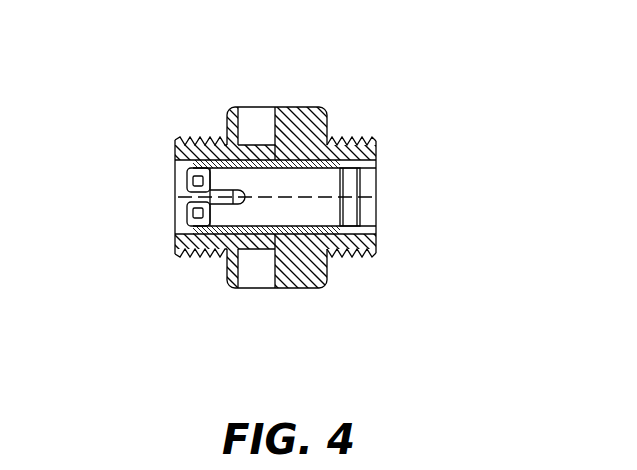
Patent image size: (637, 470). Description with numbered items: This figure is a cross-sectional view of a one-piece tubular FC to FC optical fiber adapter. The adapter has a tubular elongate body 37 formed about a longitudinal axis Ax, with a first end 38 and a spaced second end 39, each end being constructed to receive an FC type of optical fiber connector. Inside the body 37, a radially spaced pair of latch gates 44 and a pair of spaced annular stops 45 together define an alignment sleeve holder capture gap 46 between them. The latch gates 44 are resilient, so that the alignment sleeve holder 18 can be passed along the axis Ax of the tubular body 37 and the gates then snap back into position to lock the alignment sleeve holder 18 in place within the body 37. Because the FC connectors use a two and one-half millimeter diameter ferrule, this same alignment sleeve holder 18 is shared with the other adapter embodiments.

The alignment sleeve holder 18 is at (279, 183).
The tubular elongate body 37 is at (317, 289).
The first end 38 is at (367, 221).
The second end 39 is at (176, 222).
The latch gates 44 is at (233, 270).
The annular stops 45 is at (273, 160).
The alignment sleeve holder capture gap 46 is at (274, 234).
The longitudinal axis Ax is at (372, 196).